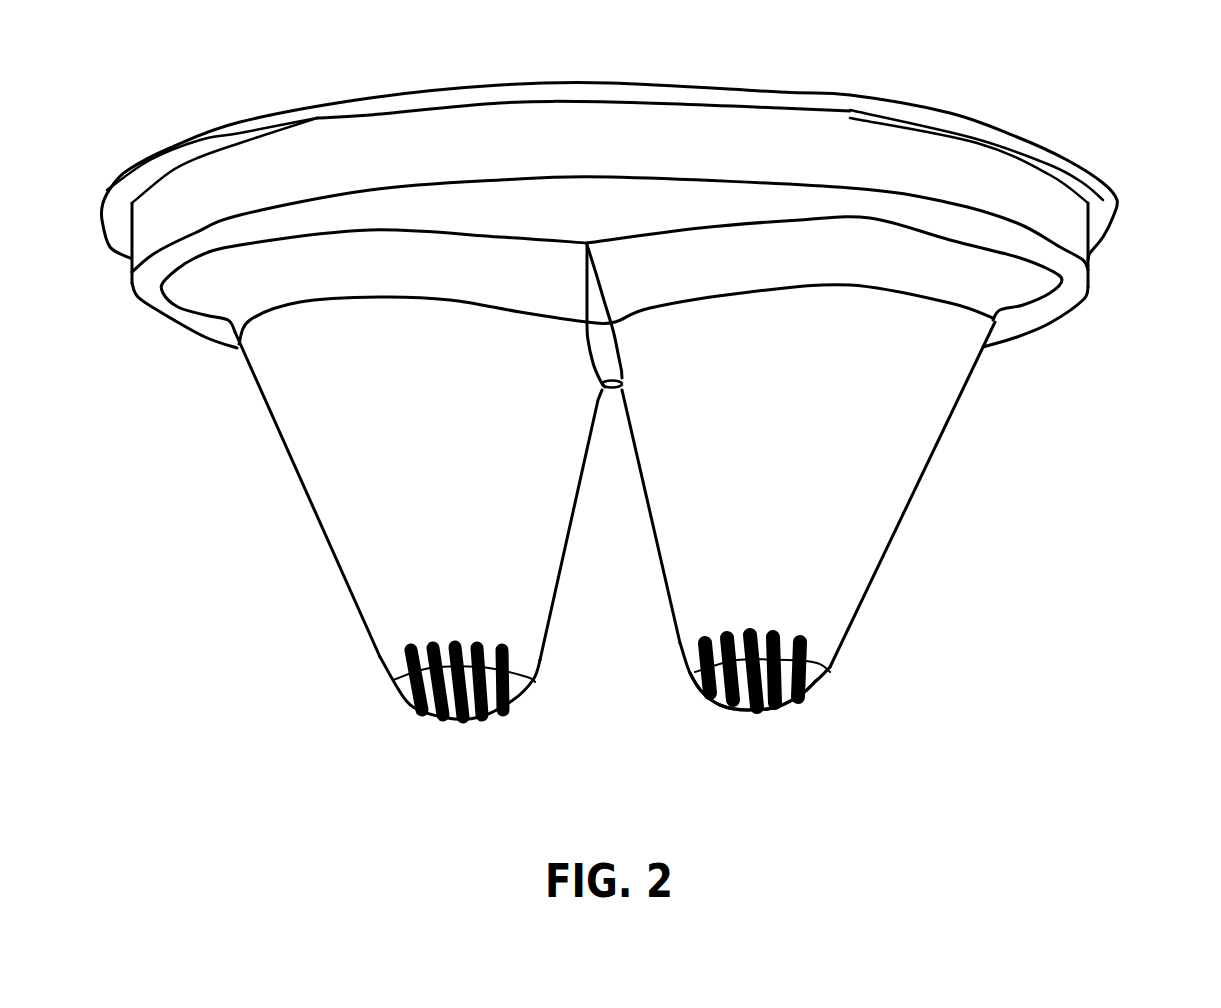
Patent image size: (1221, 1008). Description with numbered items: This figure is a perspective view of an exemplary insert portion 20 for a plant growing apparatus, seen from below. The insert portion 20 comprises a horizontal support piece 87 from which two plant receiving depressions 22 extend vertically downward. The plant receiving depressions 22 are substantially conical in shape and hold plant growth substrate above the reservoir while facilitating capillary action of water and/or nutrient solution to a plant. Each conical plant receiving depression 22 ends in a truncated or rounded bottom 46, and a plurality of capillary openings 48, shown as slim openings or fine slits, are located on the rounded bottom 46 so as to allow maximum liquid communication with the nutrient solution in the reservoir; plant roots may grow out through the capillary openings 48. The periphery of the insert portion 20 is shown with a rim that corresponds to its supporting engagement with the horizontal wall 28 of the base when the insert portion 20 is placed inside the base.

The insert portion 20 is at (656, 388).
The plant receiving depression 22 is at (310, 505).
The horizontal wall 28 is at (1063, 233).
The rounded bottom 46 is at (817, 678).
The capillary openings 48 is at (817, 693).
The horizontal support piece 87 is at (617, 207).